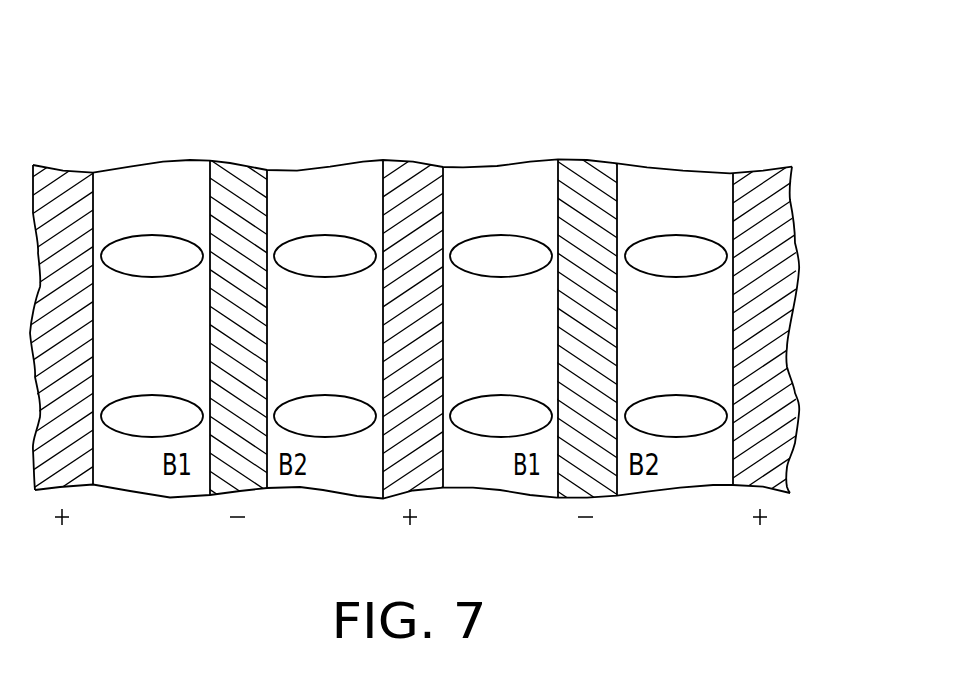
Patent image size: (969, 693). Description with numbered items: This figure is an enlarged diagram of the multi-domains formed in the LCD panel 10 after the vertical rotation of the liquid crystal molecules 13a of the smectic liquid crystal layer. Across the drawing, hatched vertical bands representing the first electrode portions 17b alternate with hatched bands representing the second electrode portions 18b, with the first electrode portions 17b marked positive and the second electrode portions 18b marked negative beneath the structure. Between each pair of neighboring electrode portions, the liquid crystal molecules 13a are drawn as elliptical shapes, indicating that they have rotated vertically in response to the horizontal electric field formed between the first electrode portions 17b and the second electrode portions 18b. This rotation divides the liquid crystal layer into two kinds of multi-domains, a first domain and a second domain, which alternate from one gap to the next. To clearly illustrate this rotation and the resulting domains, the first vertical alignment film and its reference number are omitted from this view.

The LCD panel 10 is at (852, 39).
The liquid crystal molecules 13a is at (162, 247).
The first electrode portions 17b is at (53, 183).
The second electrode portions 18b is at (243, 183).